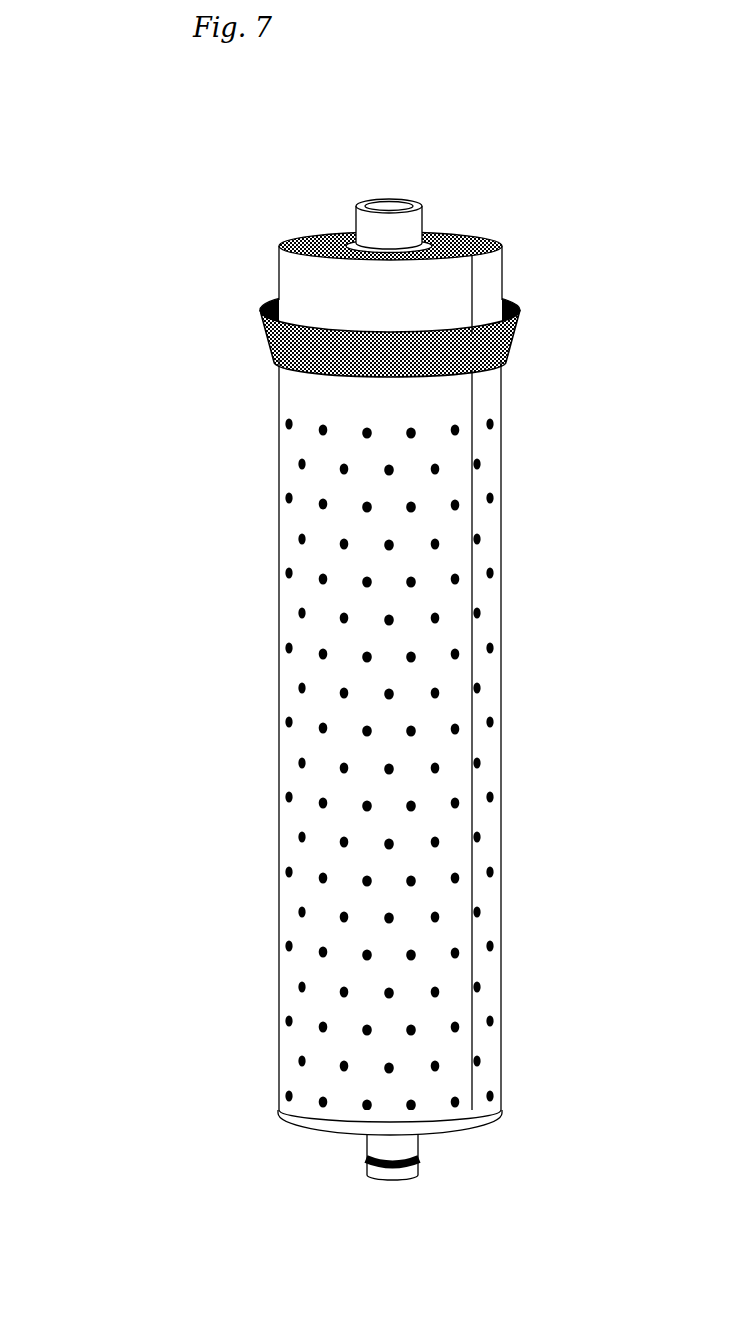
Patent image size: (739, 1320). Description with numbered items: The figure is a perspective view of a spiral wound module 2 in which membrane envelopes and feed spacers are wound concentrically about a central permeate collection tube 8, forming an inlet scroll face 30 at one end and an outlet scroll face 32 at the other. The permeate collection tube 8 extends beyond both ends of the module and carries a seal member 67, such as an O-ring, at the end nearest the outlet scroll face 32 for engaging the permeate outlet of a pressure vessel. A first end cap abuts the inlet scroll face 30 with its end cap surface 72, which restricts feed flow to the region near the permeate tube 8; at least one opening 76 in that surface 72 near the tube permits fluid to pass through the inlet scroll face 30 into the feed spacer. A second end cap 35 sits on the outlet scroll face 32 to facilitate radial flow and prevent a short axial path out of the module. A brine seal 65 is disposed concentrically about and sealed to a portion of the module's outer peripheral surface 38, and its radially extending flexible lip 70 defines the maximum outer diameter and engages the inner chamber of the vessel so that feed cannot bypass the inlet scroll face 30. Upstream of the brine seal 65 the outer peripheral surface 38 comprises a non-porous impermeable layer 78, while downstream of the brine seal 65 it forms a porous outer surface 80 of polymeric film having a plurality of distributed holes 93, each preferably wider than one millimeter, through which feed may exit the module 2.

The module 2 is at (138, 240).
The permeate collection tube 8 is at (371, 201).
The inlet scroll face 30 is at (283, 247).
The outlet scroll face 32 is at (502, 1110).
The second end cap 35 is at (280, 1115).
The outer peripheral surface 38 is at (290, 522).
The brine seal 65 is at (257, 333).
The seal member 67 is at (367, 1165).
The flexible lip 70 is at (265, 303).
The end cap surface 72 is at (462, 243).
The opening 76 is at (430, 236).
The impermeable layer 78 is at (503, 281).
The porous outer surface 80 is at (495, 602).
The holes 93 is at (290, 642).